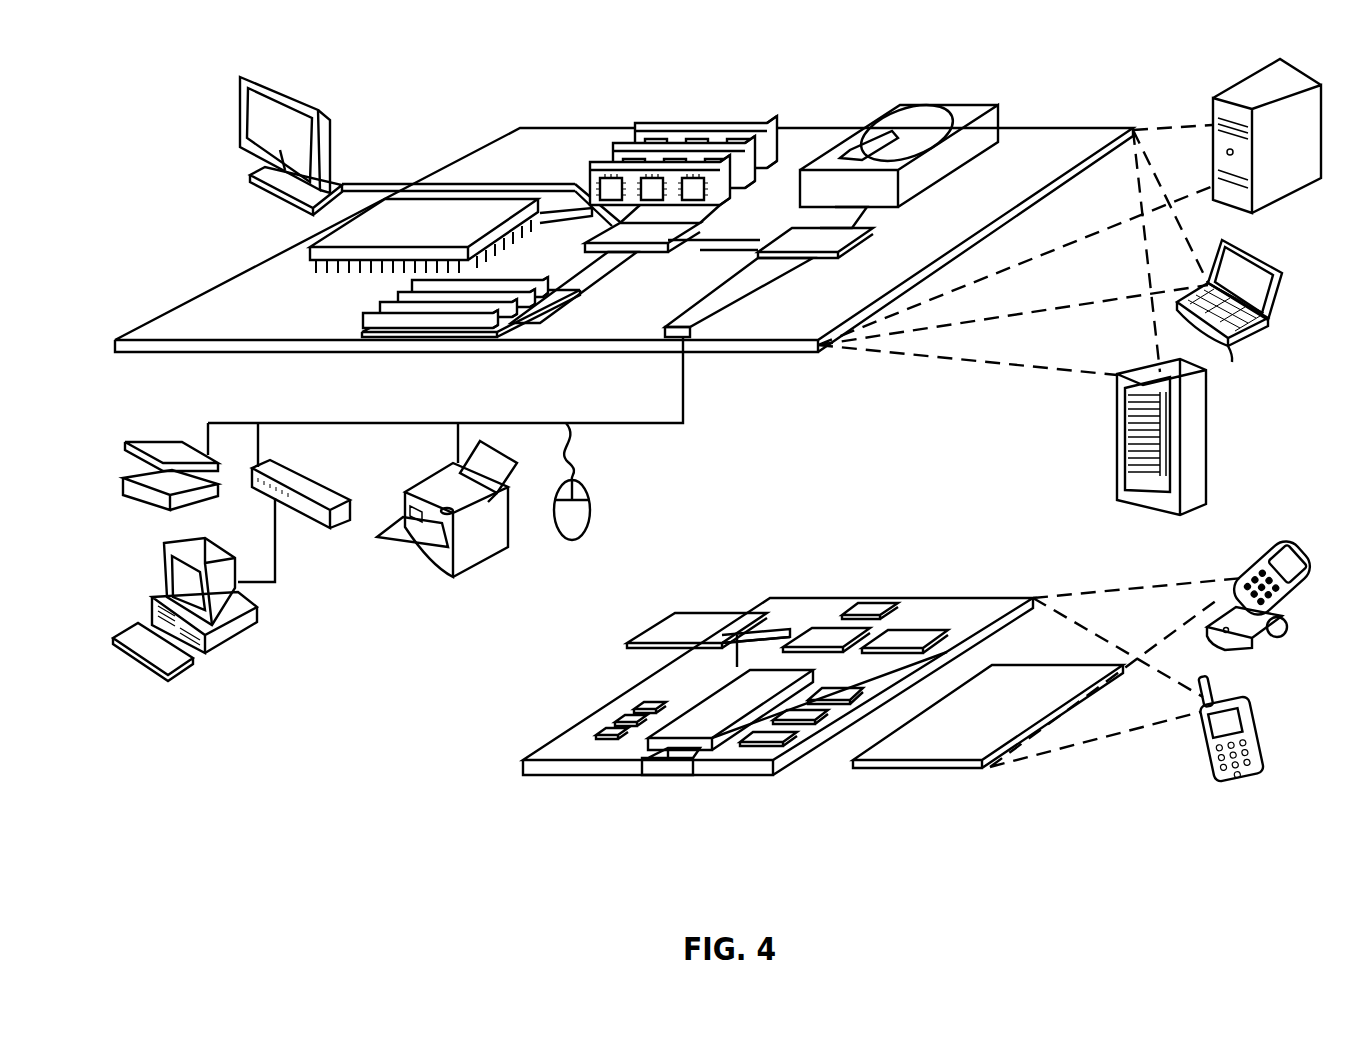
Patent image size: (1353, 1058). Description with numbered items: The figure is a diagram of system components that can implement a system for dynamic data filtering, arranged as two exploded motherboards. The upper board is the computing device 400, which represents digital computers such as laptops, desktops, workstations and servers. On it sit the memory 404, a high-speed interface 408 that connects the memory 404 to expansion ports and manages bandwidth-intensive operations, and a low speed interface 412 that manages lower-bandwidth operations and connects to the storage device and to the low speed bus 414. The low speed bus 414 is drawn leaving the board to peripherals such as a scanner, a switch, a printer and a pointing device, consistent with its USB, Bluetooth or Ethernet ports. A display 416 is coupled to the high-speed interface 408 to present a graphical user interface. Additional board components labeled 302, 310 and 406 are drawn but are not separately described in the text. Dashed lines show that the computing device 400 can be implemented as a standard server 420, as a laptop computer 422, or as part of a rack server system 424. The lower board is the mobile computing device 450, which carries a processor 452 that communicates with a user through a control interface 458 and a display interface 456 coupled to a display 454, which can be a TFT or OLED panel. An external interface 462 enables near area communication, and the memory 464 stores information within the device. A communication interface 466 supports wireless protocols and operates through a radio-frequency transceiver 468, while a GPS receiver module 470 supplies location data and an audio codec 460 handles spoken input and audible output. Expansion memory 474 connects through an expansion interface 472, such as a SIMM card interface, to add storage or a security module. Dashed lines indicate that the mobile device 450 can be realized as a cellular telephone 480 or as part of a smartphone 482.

The computing device 400 is at (441, 98).
The processor 302 is at (310, 251).
The memory modules 310 is at (380, 315).
The memory 404 is at (698, 124).
The hard disk drive 406 is at (878, 108).
The high-speed interface 408 is at (617, 238).
The low speed interface 412 is at (793, 235).
The low speed bus 414 is at (685, 337).
The display 416 is at (244, 78).
The standard server 420 is at (1213, 114).
The laptop computer 422 is at (1232, 340).
The rack server system 424 is at (1117, 465).
The computing device 450 is at (498, 776).
The processor 452 is at (703, 730).
The display 454 is at (948, 750).
The display interface 456 is at (770, 745).
The control interface 458 is at (808, 716).
The audio codec 460 is at (833, 698).
The external interface 462 is at (667, 762).
The memory 464 is at (610, 722).
The communication interface 466 is at (813, 636).
The transceiver 468 is at (900, 636).
The GPS receiver module 470 is at (874, 602).
The expansion interface 472 is at (745, 612).
The expansion memory 474 is at (668, 612).
The cellular telephone 480 is at (1265, 578).
The smartphone 482 is at (1205, 735).